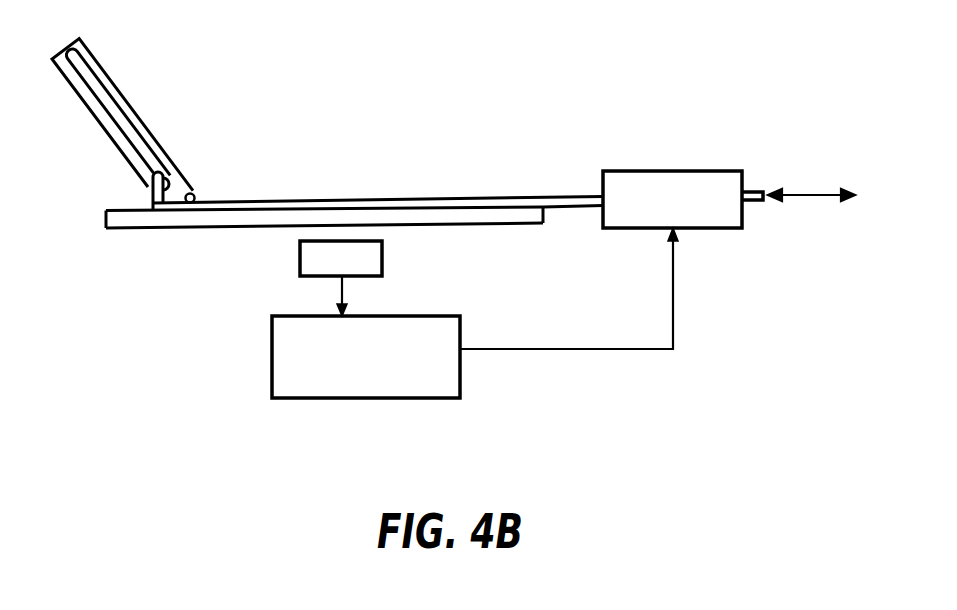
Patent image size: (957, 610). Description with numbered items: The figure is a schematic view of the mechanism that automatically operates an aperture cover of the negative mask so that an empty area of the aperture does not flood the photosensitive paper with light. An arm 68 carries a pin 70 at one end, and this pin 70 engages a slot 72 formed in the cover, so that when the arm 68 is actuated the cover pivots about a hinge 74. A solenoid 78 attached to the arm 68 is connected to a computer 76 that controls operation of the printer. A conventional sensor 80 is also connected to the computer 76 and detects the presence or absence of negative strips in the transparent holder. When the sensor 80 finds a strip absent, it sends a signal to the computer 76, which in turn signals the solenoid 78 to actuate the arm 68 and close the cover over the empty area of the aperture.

The arm 68 is at (572, 193).
The pin 70 is at (160, 174).
The slot 72 is at (90, 83).
The hinge 74 is at (192, 197).
The computer 76 is at (272, 363).
The solenoid 78 is at (688, 171).
The sensor 80 is at (300, 263).